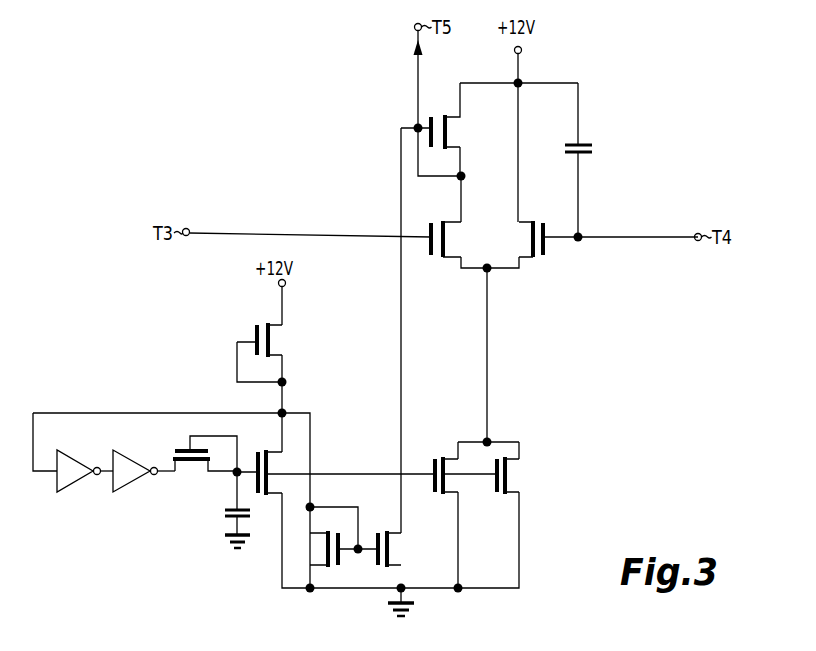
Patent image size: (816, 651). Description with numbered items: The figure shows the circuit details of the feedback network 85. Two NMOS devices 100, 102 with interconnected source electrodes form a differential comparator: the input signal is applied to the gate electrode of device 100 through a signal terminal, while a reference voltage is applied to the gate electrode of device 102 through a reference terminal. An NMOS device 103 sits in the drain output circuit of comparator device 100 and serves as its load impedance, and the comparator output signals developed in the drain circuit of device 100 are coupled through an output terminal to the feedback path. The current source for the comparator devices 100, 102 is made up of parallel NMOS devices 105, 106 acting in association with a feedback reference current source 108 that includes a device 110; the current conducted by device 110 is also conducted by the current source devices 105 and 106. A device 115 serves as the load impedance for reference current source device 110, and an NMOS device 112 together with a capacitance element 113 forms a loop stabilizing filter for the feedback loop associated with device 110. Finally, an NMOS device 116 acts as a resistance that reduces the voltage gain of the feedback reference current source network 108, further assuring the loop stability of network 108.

The feedback network 85 is at (598, 340).
The NMOS device 100 is at (485, 250).
The NMOS device 102 is at (524, 250).
The NMOS device 103 is at (494, 147).
The NMOS device 105 is at (489, 503).
The NMOS device 106 is at (548, 492).
The feedback reference current source 108 is at (165, 445).
The device 110 is at (308, 467).
The NMOS device 112 is at (202, 502).
The capacitance element 113 is at (228, 515).
The device 115 is at (328, 352).
The NMOS device 116 is at (307, 560).